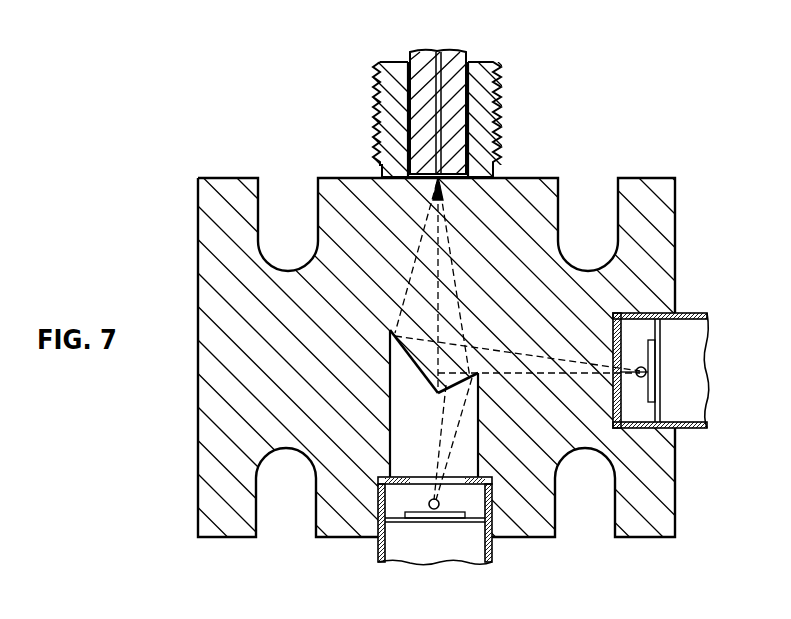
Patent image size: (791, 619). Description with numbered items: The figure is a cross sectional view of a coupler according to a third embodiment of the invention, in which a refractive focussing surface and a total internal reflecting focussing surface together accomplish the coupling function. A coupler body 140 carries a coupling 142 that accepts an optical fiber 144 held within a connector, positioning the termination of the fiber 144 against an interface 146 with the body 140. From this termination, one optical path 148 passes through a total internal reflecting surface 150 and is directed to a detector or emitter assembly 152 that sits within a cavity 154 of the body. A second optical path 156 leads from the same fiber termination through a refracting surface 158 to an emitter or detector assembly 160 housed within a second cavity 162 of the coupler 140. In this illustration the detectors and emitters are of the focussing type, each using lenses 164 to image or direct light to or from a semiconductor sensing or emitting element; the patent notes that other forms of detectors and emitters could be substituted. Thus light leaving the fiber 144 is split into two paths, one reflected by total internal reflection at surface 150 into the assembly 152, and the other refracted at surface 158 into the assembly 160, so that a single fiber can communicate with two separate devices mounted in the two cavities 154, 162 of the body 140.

The coupler body 140 is at (362, 186).
The coupling 142 is at (404, 55).
The optical fiber 144 is at (439, 50).
The interface 146 is at (444, 182).
The optical path 148 is at (426, 282).
The total internal reflecting surface 150 is at (414, 362).
The detector or emitter assembly 152 is at (656, 331).
The cavity 154 is at (612, 411).
The second optical path 156 is at (450, 318).
The refracting surface 158 is at (450, 392).
The emitter or detector assembly 160 is at (396, 524).
The second cavity 162 is at (432, 478).
The lenses 164 is at (645, 376).